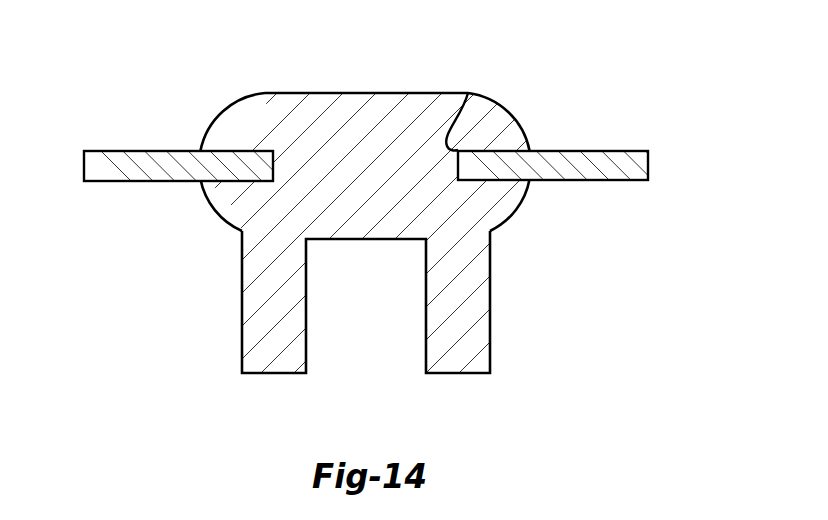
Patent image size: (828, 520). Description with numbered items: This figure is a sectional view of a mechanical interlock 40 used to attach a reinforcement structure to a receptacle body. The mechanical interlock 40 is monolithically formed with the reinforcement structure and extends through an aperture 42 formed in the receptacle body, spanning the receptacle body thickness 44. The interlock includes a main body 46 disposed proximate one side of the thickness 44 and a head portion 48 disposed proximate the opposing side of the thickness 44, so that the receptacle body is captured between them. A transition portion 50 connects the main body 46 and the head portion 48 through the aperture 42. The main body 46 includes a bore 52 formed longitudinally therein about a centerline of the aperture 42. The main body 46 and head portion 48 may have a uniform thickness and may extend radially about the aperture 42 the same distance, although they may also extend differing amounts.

The mechanical interlock 40 is at (414, 213).
The aperture 42 is at (468, 93).
The receptacle body thickness 44 is at (84, 164).
The main body 46 is at (512, 218).
The head portion 48 is at (220, 113).
The transition portion 50 is at (388, 132).
The bore 52 is at (338, 358).